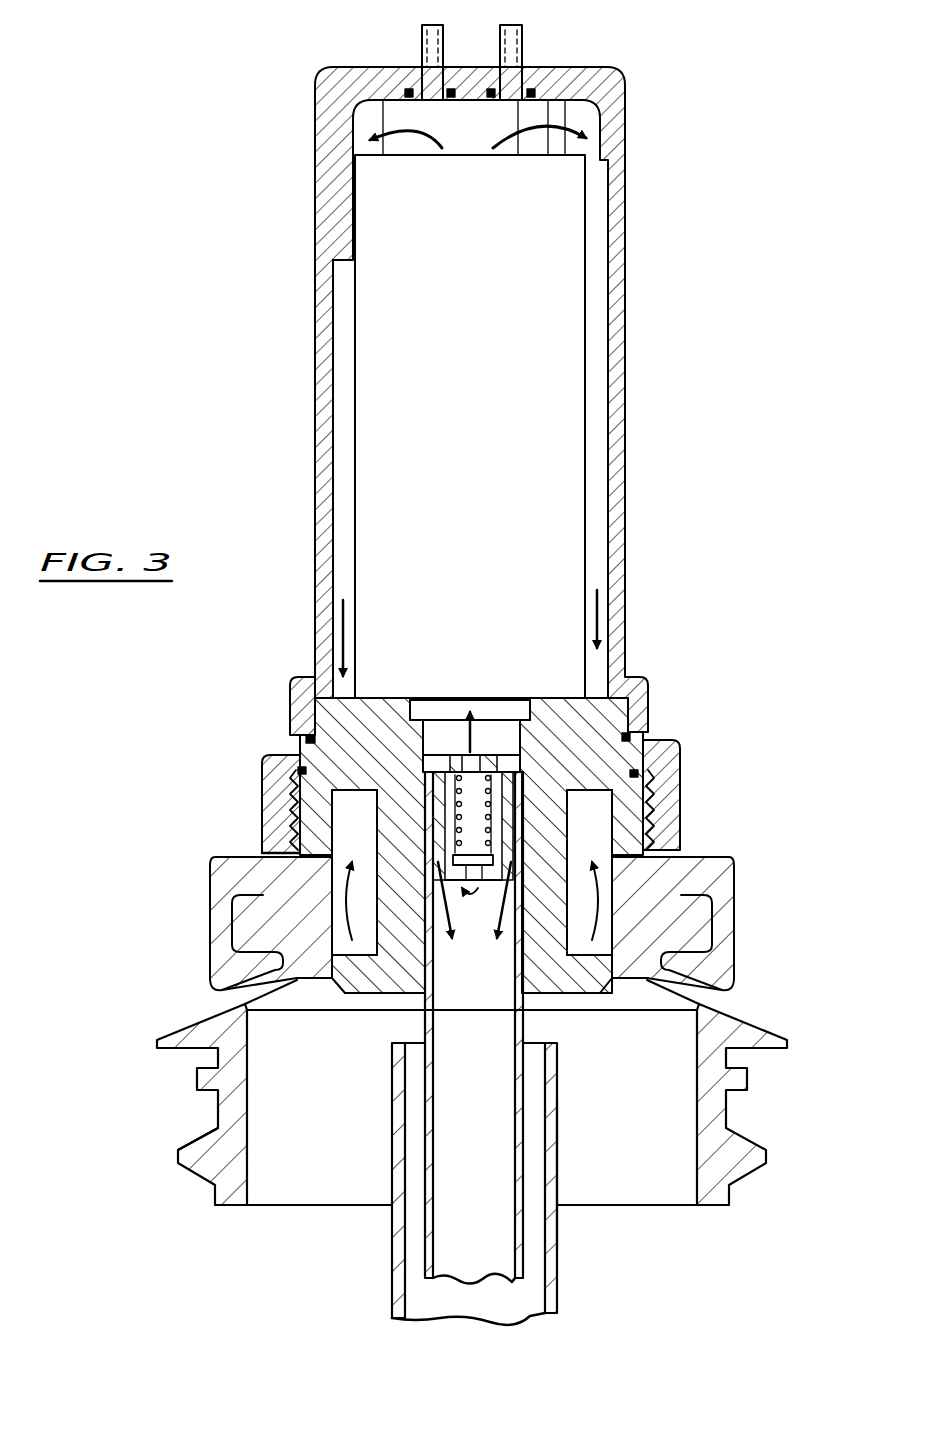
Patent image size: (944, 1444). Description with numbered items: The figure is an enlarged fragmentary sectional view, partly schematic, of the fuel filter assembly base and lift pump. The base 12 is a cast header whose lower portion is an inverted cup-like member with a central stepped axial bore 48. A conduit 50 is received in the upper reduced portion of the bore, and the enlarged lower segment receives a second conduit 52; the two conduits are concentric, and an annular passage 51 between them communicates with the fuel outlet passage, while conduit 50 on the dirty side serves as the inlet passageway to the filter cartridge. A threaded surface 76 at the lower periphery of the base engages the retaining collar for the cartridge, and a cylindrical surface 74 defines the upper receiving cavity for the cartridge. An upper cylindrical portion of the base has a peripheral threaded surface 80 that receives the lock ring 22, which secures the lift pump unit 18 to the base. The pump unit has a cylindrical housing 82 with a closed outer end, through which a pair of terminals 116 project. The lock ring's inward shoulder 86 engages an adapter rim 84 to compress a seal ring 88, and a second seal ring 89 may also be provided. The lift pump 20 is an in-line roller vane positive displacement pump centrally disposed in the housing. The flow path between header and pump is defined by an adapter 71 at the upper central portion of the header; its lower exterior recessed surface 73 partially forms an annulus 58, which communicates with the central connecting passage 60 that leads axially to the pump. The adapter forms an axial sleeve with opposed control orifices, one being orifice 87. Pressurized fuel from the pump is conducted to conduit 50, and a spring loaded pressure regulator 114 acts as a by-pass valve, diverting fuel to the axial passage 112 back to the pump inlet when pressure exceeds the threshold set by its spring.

The base 12 is at (745, 1008).
The lift pump unit 18 is at (652, 240).
The lift pump 20 is at (492, 349).
The lock ring 22 is at (690, 830).
The central stepped axial bore 48 is at (420, 800).
The conduit 50 is at (445, 1110).
The annular passage 51 is at (540, 1195).
The second conduit 52 is at (392, 1150).
The annulus 58 is at (345, 815).
The upper axial connecting passage 60 is at (507, 705).
The adapter 71 is at (600, 725).
The lower exterior recessed surface 73 is at (370, 838).
The cylindrical surface 74 is at (720, 1165).
The threaded surface 76 is at (190, 1140).
The peripheral threaded surface 80 is at (690, 800).
The cylindrical housing 82 is at (315, 435).
The adapter rim 84 is at (298, 770).
The inward shoulder 86 is at (302, 738).
The control orifice 87 is at (473, 763).
The seal ring 88 is at (640, 772).
The second seal ring 89 is at (640, 737).
The axial passage 112 is at (503, 733).
The spring loaded pressure regulator 114 is at (476, 803).
The terminals 116 is at (425, 25).